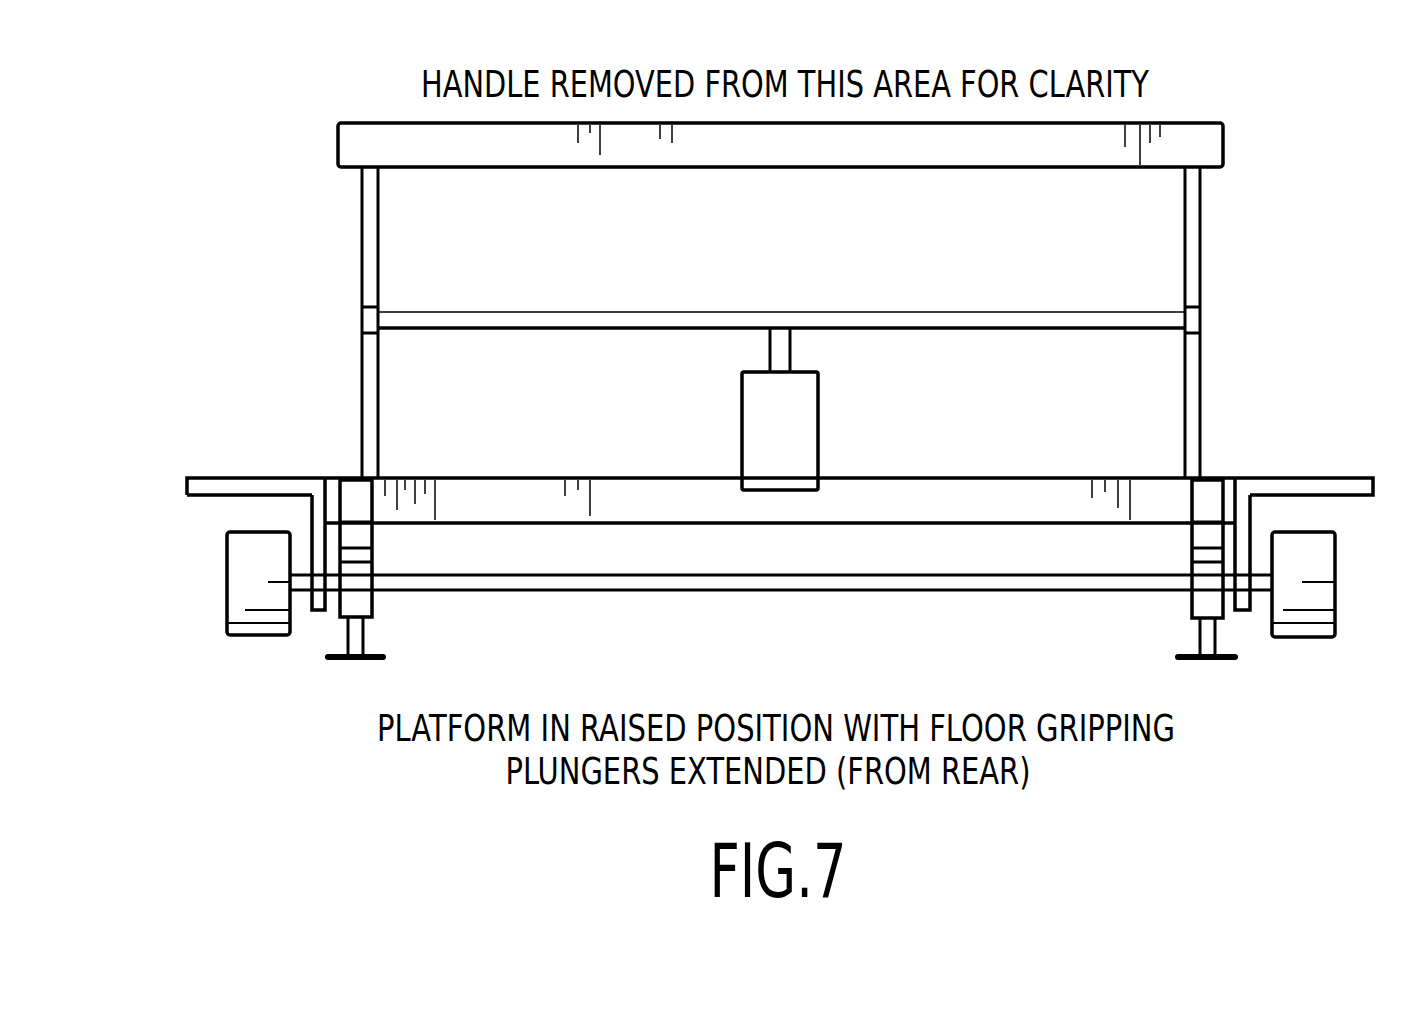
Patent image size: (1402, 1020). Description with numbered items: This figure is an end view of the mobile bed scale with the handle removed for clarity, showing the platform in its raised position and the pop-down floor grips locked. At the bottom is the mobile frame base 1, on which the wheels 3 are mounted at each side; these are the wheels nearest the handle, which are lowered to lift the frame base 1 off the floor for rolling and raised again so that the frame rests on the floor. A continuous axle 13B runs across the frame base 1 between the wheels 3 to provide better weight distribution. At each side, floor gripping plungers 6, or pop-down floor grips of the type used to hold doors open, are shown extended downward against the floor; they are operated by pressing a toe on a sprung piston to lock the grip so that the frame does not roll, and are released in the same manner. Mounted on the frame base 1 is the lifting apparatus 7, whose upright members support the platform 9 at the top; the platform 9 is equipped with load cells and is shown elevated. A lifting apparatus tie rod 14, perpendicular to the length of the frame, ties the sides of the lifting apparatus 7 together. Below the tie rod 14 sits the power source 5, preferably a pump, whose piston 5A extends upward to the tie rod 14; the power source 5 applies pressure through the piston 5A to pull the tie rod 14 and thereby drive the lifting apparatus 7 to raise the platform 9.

The mobile frame base 1 is at (1262, 460).
The wheels 3 is at (212, 597).
The power source 5 is at (800, 420).
The piston 5A is at (783, 352).
The floor gripping plungers 6 is at (383, 641).
The lifting apparatus 7 is at (350, 296).
The platform 9 is at (1200, 120).
The continuous axle 13B is at (880, 606).
The lifting apparatus tie rod 14 is at (772, 298).